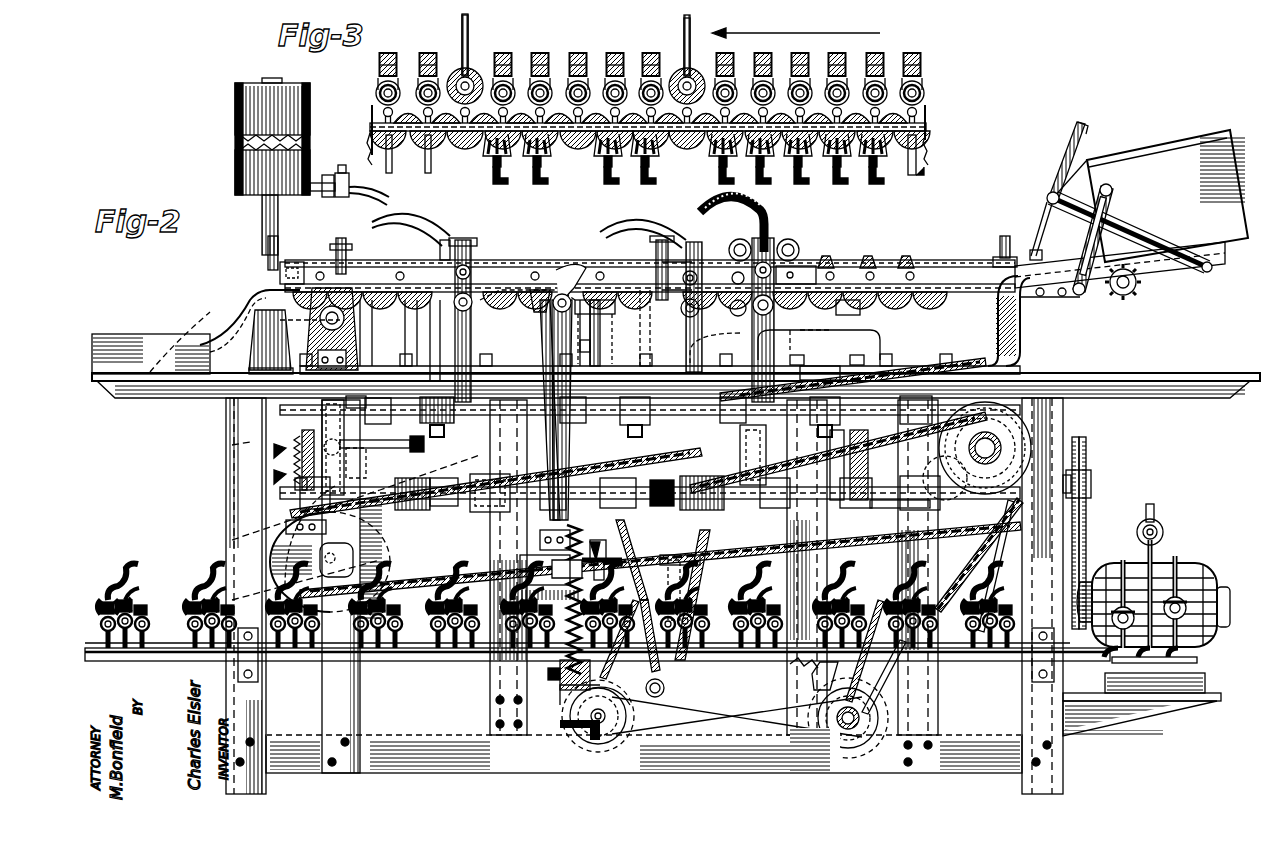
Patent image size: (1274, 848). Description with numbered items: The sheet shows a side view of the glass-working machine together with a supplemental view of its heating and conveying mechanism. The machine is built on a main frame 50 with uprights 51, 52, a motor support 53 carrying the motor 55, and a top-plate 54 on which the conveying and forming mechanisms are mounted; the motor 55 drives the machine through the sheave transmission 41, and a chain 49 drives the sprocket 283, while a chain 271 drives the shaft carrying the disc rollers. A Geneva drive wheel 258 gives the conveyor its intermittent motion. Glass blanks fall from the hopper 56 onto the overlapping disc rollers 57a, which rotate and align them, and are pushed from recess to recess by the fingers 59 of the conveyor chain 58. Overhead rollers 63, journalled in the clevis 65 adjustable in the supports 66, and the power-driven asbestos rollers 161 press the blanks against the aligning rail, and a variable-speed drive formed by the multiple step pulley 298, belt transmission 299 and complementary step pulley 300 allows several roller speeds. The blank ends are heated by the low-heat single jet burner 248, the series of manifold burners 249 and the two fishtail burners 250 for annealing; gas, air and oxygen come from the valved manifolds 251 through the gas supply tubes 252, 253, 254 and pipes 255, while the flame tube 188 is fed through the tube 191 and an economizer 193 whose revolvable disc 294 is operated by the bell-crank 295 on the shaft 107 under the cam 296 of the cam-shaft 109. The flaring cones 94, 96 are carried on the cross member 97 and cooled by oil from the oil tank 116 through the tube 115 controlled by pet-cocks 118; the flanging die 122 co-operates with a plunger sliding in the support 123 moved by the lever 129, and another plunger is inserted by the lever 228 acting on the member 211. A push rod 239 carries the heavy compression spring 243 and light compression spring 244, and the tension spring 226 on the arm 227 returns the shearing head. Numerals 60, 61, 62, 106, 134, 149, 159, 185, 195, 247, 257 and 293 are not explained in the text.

In FIG. 2, the sheave transmission 41 is at (1098, 552).
In FIG. 2, the chain 49 is at (706, 556).
In FIG. 2, the main frame 50 is at (232, 516).
In FIG. 2, the upright 51 is at (1022, 537).
In FIG. 2, the upright 52 is at (228, 464).
In FIG. 2, the motor support 53 is at (1204, 698).
In FIG. 2, the top-plate 54 is at (826, 370).
In FIG. 2, the motor 55 is at (1180, 559).
In FIG. 2, the hopper 56 is at (1139, 208).
In FIG. 3, the disc rollers 57a is at (872, 145).
In FIG. 2, the disc rollers 57a is at (490, 274).
In FIG. 2, the conveyor chain 58 is at (904, 266).
In FIG. 2, the fingers 59 is at (866, 266).
In FIG. 2, the housing 60 is at (353, 262).
In FIG. 2, the rod 61 is at (268, 280).
In FIG. 2, the pipe 62 is at (272, 318).
In FIG. 3, the overhead rollers 63 is at (379, 90).
In FIG. 3, the clevis 65 is at (924, 76).
In FIG. 3, the supports 66 is at (381, 61).
In FIG. 2, the flaring cone 94 is at (790, 248).
In FIG. 2, the flaring cone 96 is at (744, 248).
In FIG. 2, the cross member 97 is at (828, 266).
In FIG. 2, the rod 106 is at (760, 458).
In FIG. 2, the shaft 107 is at (450, 414).
In FIG. 2, the cam-shaft 109 is at (726, 508).
In FIG. 2, the tube 115 is at (742, 208).
In FIG. 2, the oil tank 116 is at (308, 102).
In FIG. 2, the pet-cocks 118 is at (350, 172).
In FIG. 2, the flanging die 122 is at (472, 264).
In FIG. 2, the support 123 is at (720, 258).
In FIG. 2, the lever 129 is at (736, 440).
In FIG. 2, the pipe 134 is at (630, 222).
In FIG. 2, the shaft 149 is at (418, 400).
In FIG. 2, the coupling 159 is at (404, 480).
In FIG. 3, the asbestos rollers 161 is at (463, 79).
In FIG. 2, the lever 185 is at (608, 544).
In FIG. 3, the tube 188 is at (468, 30).
In FIG. 2, the tube 191 is at (375, 223).
In FIG. 2, the economizer 193 is at (860, 454).
In FIG. 2, the column 195 is at (666, 262).
In FIG. 2, the member 211 is at (576, 262).
In FIG. 2, the tension spring 226 is at (660, 686).
In FIG. 2, the arm 227 is at (685, 595).
In FIG. 2, the lever 228 is at (554, 356).
In FIG. 2, the push rod 239 is at (595, 336).
In FIG. 2, the compression spring 243 is at (569, 548).
In FIG. 2, the compression spring 244 is at (570, 684).
In FIG. 2, the table 247 is at (146, 338).
In FIG. 3, the single jet burner 248 is at (920, 156).
In FIG. 3, the manifold burners 249 is at (538, 162).
In FIG. 3, the fishtail burners 250 is at (428, 158).
In FIG. 2, the valved manifolds 251 is at (136, 588).
In FIG. 2, the gas supply tube 252 is at (694, 652).
In FIG. 2, the gas supply tube 253 is at (734, 652).
In FIG. 2, the gas supply tube 254 is at (788, 662).
In FIG. 3, the pipes 255 is at (528, 186).
In FIG. 2, the pipes 255 is at (214, 584).
In FIG. 2, the wheel 257 is at (386, 540).
In FIG. 2, the Geneva drive wheel 258 is at (276, 436).
In FIG. 2, the chain 271 is at (966, 568).
In FIG. 2, the sprocket 283 is at (378, 558).
In FIG. 2, the rod 293 is at (911, 362).
In FIG. 2, the revolvable disc 294 is at (858, 472).
In FIG. 2, the bell-crank 295 is at (856, 492).
In FIG. 2, the cam 296 is at (854, 512).
In FIG. 2, the multiple step pulley 298 is at (814, 692).
In FIG. 2, the belt transmission 299 is at (716, 706).
In FIG. 2, the step pulley 300 is at (640, 710).